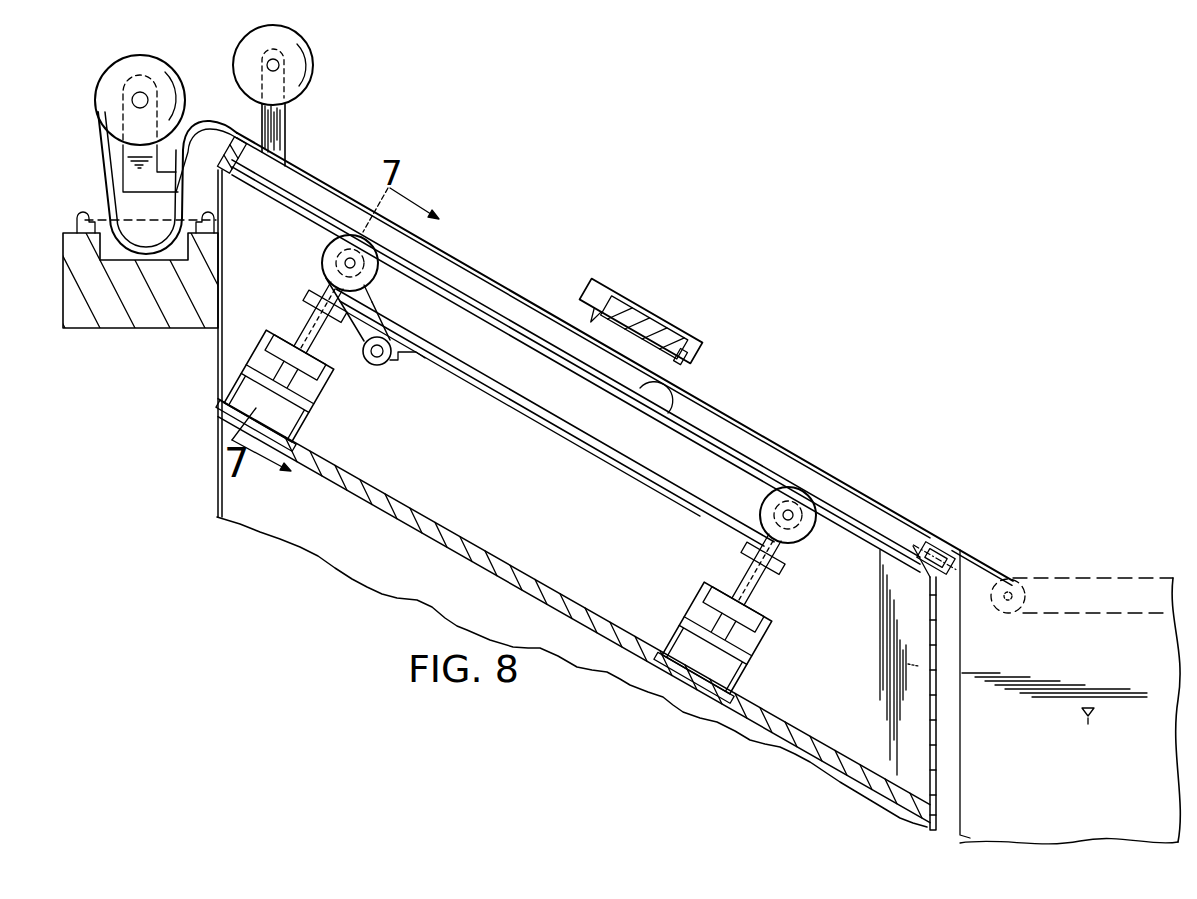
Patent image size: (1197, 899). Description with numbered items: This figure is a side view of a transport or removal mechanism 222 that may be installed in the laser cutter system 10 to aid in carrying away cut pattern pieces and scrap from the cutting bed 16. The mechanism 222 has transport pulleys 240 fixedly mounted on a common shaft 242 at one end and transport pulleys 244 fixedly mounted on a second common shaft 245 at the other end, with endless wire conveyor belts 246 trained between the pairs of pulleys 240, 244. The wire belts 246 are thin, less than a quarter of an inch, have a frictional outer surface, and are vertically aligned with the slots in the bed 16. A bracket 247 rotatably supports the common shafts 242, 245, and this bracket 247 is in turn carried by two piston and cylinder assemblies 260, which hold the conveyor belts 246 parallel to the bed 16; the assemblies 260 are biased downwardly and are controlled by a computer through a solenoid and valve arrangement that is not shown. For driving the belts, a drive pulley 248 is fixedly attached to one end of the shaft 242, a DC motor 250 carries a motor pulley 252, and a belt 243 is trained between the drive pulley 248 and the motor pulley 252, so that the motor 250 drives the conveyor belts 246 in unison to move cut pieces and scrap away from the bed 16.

The laser cutter system 10 is at (332, 178).
The bed 16 is at (516, 314).
The transport or removal mechanism 222 is at (531, 428).
The transport pulleys 240 is at (339, 243).
The common shaft 242 is at (346, 264).
The belt 243 is at (381, 311).
The transport pulleys 244 is at (808, 525).
The common shaft 245 is at (796, 522).
The endless wire conveyor belts 246 is at (631, 391).
The bracket 247 is at (621, 472).
The drive pulley 248 is at (371, 274).
The DC motor 250 is at (390, 363).
The motor pulley 252 is at (371, 356).
The piston and cylinder assemblies 260 is at (317, 392).